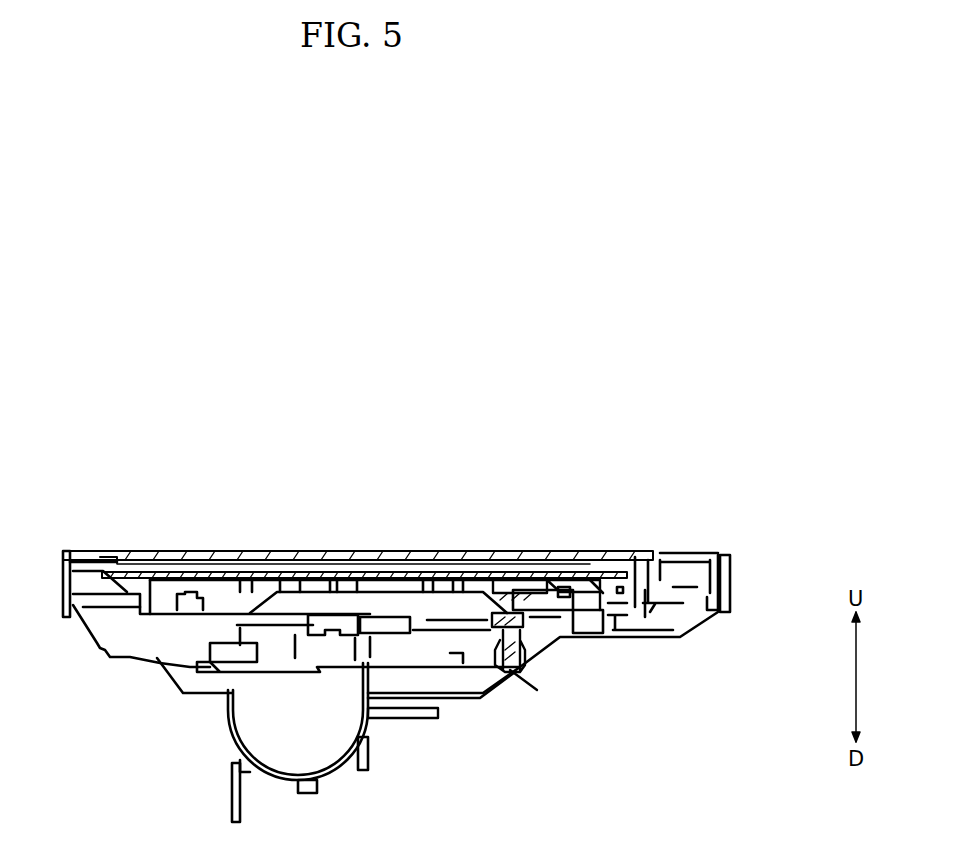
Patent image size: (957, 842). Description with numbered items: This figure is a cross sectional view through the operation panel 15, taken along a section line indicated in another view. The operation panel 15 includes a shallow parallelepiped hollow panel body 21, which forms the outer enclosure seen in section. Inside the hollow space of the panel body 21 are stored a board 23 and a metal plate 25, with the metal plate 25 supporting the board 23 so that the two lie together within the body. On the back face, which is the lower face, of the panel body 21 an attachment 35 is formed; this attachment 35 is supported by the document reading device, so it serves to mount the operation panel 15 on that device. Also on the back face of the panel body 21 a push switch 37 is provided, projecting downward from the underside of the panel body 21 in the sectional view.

The operation panel 15 is at (336, 440).
The panel body 21 is at (160, 548).
The board 23 is at (475, 618).
The metal plate 25 is at (552, 592).
The attachment 35 is at (400, 715).
The push switch 37 is at (507, 663).